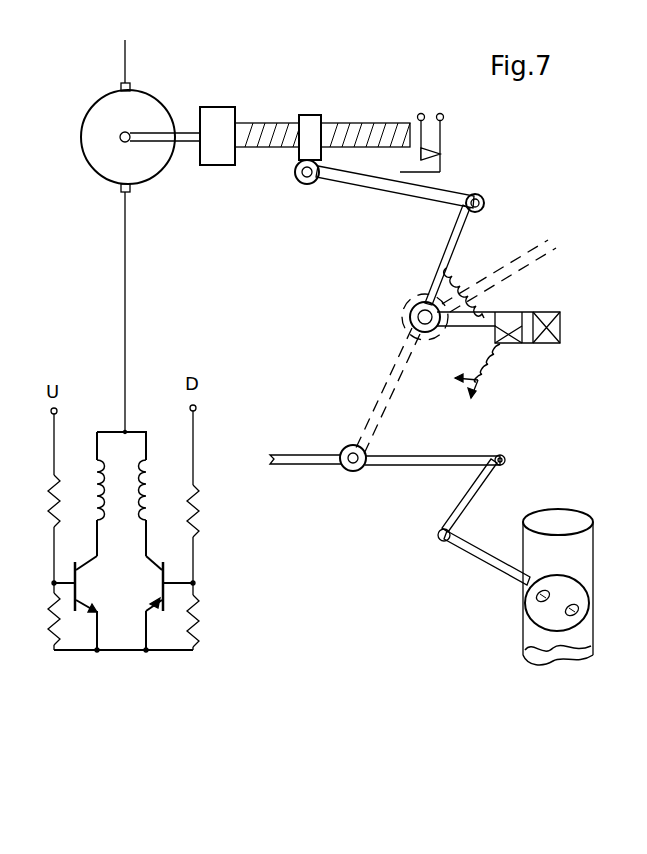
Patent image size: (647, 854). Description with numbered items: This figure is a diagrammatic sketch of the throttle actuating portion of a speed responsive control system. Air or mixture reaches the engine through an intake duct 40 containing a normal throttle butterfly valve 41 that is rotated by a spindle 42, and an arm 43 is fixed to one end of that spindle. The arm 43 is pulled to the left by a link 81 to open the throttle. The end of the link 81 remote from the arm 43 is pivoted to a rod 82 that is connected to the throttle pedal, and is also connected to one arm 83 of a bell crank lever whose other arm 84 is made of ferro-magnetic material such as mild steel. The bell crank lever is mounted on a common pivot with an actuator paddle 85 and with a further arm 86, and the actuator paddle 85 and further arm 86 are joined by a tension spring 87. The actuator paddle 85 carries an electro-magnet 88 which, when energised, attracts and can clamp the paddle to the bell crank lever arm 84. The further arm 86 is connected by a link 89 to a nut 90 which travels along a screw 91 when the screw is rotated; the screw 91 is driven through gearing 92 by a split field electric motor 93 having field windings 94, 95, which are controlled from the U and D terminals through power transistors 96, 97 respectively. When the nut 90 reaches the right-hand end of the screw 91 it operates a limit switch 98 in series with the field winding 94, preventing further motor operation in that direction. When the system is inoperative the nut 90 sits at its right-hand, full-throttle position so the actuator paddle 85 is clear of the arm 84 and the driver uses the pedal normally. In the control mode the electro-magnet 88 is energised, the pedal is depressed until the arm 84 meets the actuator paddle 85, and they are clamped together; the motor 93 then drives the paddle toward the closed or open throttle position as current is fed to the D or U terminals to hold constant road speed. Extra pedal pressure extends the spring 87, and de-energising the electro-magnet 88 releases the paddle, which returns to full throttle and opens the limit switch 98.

The intake duct 40 is at (593, 528).
The throttle butterfly valve 41 is at (538, 615).
The spindle 42 is at (482, 545).
The arm 43 is at (440, 512).
The link 81 is at (418, 472).
The rod 82 is at (300, 453).
The bell crank lever arm 83 is at (374, 388).
The bell crank lever arm 84 is at (556, 248).
The actuator paddle 85 is at (552, 312).
The further arm 86 is at (438, 252).
The tension spring 87 is at (470, 267).
The electro-magnet 88 is at (548, 354).
The link 89 is at (454, 184).
The nut 90 is at (309, 115).
The screw 91 is at (362, 123).
The gearing 92 is at (216, 106).
The split field electric motor 93 is at (140, 117).
The field winding 94 is at (86, 466).
The field winding 95 is at (155, 478).
The power transistor 96 is at (85, 581).
The power transistor 97 is at (158, 588).
The limit switch 98 is at (430, 120).